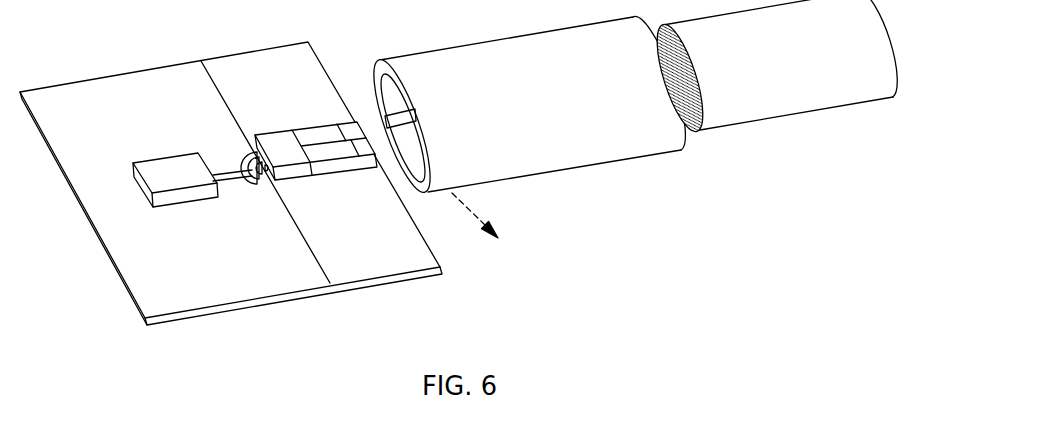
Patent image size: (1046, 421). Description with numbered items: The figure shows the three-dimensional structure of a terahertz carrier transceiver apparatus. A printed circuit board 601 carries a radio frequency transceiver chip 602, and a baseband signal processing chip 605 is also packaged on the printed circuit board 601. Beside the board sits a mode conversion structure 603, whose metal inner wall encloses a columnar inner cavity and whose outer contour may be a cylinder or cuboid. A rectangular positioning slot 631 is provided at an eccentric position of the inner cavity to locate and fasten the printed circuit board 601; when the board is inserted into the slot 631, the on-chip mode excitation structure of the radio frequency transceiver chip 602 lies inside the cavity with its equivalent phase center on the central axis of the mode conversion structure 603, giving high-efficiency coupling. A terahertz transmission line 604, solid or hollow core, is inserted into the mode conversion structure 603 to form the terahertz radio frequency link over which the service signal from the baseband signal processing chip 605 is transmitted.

The printed circuit board 601 is at (239, 183).
The radio frequency transceiver chip 602 is at (309, 166).
The mode conversion structure 603 is at (524, 109).
The terahertz transmission line 604 is at (772, 78).
The baseband signal processing chip 605 is at (192, 195).
The rectangular positioning slot 631 is at (491, 231).